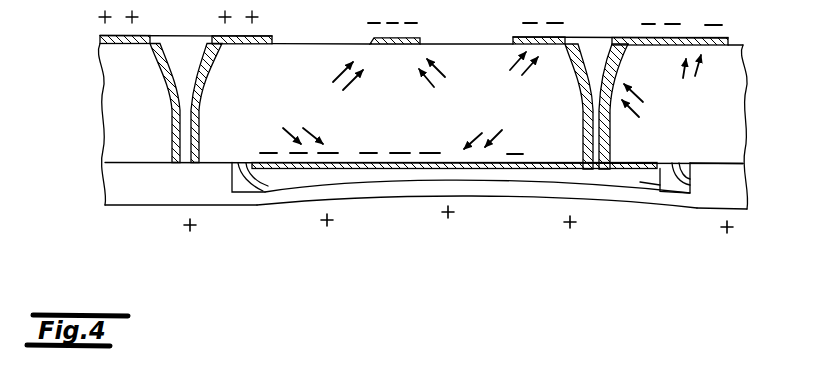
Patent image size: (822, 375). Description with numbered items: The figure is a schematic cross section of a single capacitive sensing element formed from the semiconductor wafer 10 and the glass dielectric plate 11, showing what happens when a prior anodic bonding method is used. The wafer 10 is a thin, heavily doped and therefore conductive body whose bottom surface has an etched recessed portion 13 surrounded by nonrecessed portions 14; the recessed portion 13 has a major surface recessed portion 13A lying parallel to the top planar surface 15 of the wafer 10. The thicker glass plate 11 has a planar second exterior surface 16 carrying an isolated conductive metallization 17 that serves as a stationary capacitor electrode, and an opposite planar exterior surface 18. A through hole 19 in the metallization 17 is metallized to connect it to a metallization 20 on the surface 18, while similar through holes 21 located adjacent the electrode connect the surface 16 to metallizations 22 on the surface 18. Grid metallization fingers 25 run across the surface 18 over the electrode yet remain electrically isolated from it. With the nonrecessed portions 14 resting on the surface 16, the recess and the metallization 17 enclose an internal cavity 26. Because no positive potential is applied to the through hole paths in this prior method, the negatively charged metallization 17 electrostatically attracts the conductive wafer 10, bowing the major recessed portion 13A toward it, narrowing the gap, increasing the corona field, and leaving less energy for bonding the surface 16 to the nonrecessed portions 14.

The semiconductor wafer 10 is at (735, 190).
The glass dielectric plate 11 is at (735, 82).
The recessed portions 13 is at (237, 163).
The major surface recessed portion 13A is at (647, 188).
The nonrecessed portions 14 is at (730, 163).
The top planar surface 15 is at (152, 207).
The second exterior surface 16 is at (265, 193).
The conductive metallizations 17 is at (563, 163).
The additional planar exterior surface 18 is at (488, 43).
The through hole 19 is at (608, 43).
The metallization 20 is at (692, 37).
The through holes 21 is at (184, 46).
The metallizations 22 is at (260, 36).
The grid metallization fingers 25 is at (423, 43).
The internal cavities 26 is at (488, 175).